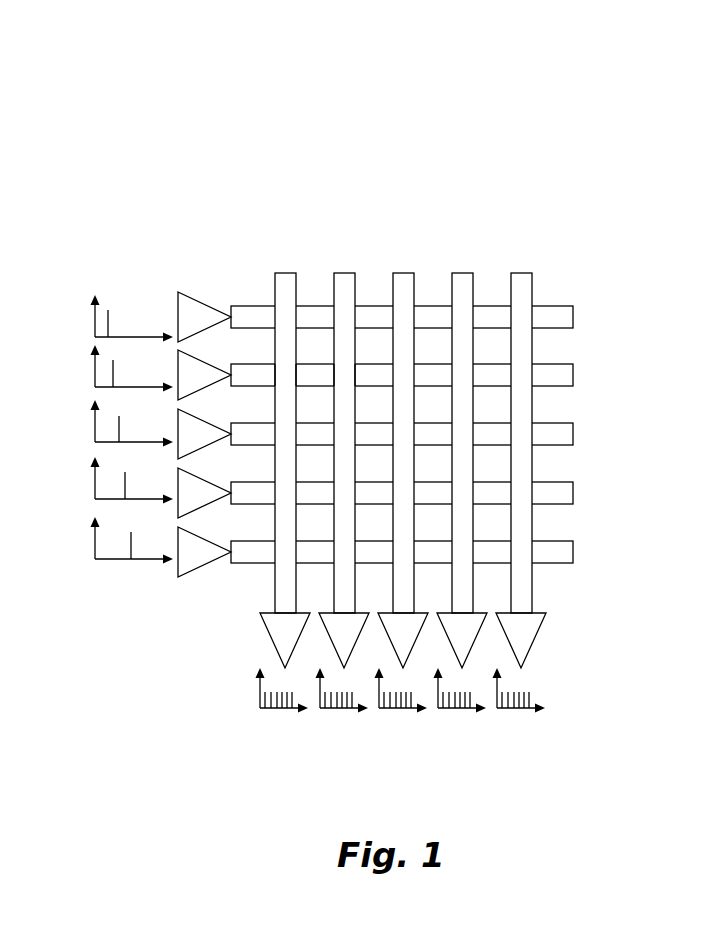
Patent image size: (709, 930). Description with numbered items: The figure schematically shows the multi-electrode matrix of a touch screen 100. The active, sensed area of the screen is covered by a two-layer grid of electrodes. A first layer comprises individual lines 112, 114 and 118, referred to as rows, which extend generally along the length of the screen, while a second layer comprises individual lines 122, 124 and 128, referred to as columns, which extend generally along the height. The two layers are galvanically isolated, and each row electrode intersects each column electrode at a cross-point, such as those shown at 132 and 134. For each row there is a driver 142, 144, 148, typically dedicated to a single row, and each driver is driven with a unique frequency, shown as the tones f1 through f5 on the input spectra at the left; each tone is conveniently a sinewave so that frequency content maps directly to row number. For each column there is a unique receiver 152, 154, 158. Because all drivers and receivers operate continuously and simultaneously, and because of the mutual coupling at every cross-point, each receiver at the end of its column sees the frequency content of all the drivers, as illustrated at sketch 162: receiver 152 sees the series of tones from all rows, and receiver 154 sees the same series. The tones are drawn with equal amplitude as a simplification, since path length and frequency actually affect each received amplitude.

The touch screen 100 is at (266, 177).
The line 112 is at (573, 313).
The line 114 is at (573, 378).
The line 118 is at (573, 552).
The line 122 is at (290, 272).
The line 124 is at (348, 272).
The line 128 is at (515, 272).
The cross-point 132 is at (283, 375).
The cross-point 134 is at (345, 375).
The driver 142 is at (178, 292).
The driver 144 is at (177, 373).
The driver 148 is at (180, 577).
The receiver 152 is at (268, 634).
The receiver 154 is at (327, 618).
The receiver 158 is at (537, 633).
The sketch 162 is at (268, 709).